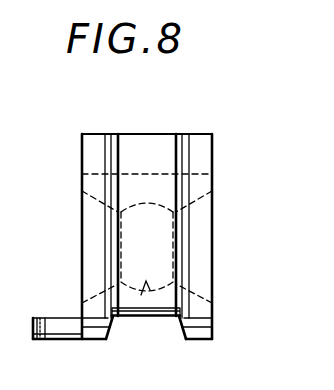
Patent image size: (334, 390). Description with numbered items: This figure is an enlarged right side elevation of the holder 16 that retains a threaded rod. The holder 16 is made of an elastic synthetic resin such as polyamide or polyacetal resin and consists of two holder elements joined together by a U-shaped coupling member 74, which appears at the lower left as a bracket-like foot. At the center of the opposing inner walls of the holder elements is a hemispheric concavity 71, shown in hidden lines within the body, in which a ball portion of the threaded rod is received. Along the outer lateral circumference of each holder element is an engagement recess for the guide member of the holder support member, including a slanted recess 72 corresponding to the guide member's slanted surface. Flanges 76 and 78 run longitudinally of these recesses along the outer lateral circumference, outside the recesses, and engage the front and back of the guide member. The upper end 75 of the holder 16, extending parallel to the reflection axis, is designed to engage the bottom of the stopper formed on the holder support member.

The holder 16 is at (224, 309).
The hemispheric concavity 71 is at (141, 313).
The slanted recess 72 is at (163, 303).
The U-shaped coupling member 74 is at (45, 318).
The upper end 75 is at (148, 132).
The flange 76 is at (102, 132).
The flange 78 is at (203, 132).